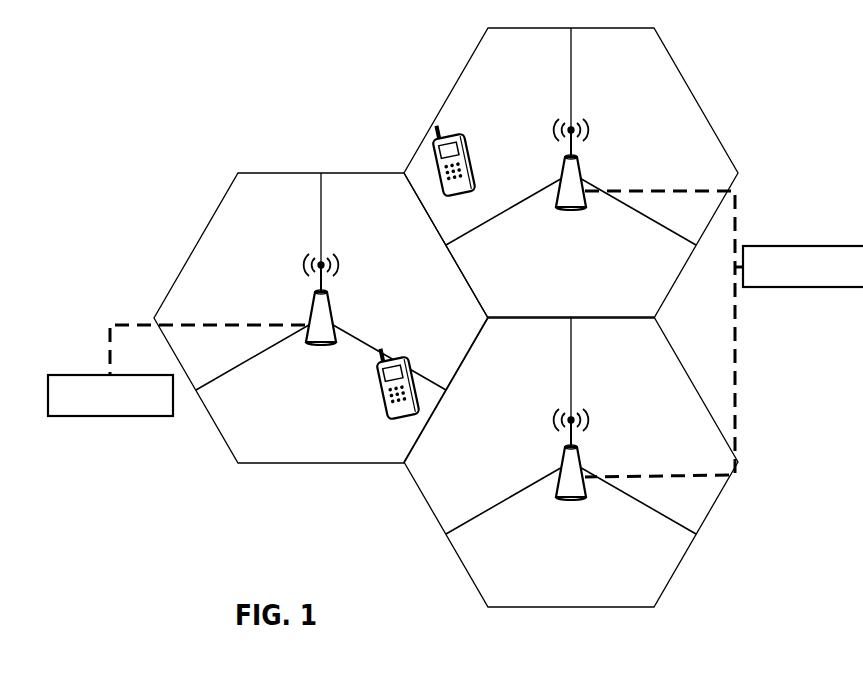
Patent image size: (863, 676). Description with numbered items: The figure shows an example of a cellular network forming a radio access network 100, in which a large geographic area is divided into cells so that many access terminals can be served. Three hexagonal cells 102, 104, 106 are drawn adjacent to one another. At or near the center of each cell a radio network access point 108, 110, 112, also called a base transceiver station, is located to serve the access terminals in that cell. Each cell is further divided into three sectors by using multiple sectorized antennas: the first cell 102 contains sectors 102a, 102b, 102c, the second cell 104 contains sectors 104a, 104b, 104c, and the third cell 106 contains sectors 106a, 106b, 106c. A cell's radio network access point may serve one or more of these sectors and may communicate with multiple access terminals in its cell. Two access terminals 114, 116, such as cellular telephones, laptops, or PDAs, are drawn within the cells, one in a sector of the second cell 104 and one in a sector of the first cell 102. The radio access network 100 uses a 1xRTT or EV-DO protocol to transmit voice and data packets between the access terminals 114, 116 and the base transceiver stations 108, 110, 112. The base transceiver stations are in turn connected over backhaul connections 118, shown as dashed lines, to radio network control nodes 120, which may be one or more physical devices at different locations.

The radio access network 100 is at (270, 88).
The cell 102 is at (305, 318).
The sector 102a is at (263, 291).
The sector 102b is at (405, 291).
The sector 102c is at (343, 443).
The cell 104 is at (578, 173).
The sector 104a is at (530, 135).
The sector 104b is at (667, 145).
The sector 104c is at (602, 275).
The cell 106 is at (536, 462).
The sector 106a is at (527, 415).
The sector 106b is at (662, 433).
The sector 106c is at (592, 580).
The radio network access point 108 is at (303, 338).
The radio network access point 110 is at (548, 205).
The radio network access point 112 is at (555, 494).
The access terminal 114 is at (466, 190).
The access terminal 116 is at (383, 412).
The backhaul connection 118 is at (108, 342).
The radio network control node 120 is at (455, 331).